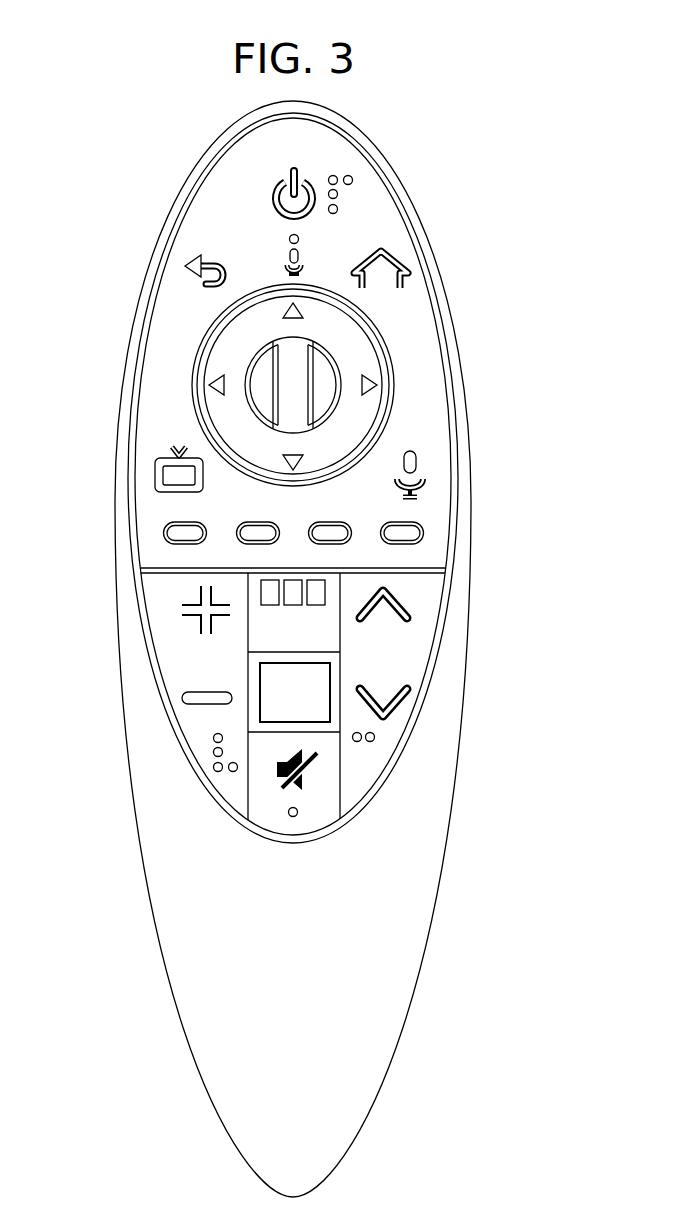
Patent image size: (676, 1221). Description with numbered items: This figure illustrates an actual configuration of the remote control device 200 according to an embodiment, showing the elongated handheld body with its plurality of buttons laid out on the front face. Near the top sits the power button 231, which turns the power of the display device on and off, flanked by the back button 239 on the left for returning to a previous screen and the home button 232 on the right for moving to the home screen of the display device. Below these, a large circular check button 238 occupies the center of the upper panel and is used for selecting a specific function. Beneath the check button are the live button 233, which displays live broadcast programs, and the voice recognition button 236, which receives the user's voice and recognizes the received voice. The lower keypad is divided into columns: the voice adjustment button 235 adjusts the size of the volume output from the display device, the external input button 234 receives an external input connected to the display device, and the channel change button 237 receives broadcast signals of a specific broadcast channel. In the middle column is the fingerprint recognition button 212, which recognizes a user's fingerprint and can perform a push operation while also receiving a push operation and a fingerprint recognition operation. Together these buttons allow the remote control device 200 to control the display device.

The remote control device 200 is at (64, 144).
The fingerprint recognition button 212 is at (310, 722).
The power button 231 is at (313, 187).
The home button 232 is at (398, 268).
The live button 233 is at (154, 482).
The external input button 234 is at (303, 584).
The voice adjustment button 235 is at (153, 670).
The voice recognition button 236 is at (427, 464).
The channel change button 237 is at (420, 644).
The check button 238 is at (258, 368).
The back button 239 is at (192, 273).